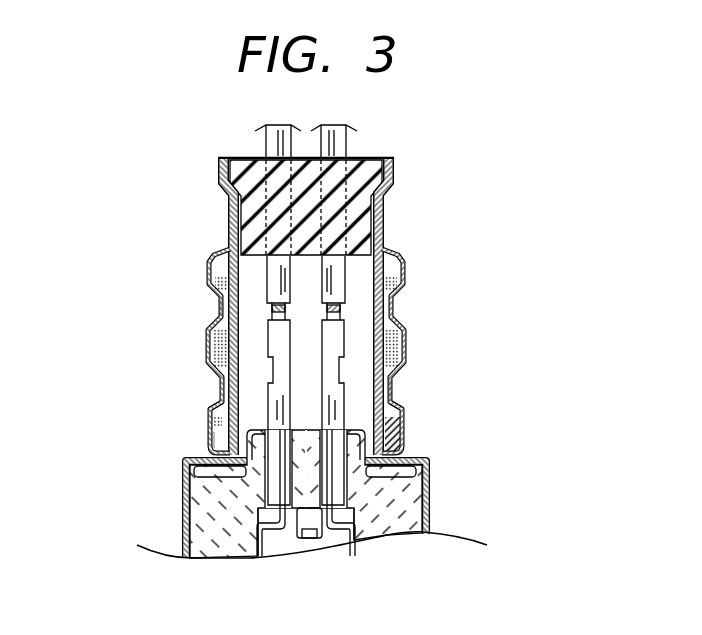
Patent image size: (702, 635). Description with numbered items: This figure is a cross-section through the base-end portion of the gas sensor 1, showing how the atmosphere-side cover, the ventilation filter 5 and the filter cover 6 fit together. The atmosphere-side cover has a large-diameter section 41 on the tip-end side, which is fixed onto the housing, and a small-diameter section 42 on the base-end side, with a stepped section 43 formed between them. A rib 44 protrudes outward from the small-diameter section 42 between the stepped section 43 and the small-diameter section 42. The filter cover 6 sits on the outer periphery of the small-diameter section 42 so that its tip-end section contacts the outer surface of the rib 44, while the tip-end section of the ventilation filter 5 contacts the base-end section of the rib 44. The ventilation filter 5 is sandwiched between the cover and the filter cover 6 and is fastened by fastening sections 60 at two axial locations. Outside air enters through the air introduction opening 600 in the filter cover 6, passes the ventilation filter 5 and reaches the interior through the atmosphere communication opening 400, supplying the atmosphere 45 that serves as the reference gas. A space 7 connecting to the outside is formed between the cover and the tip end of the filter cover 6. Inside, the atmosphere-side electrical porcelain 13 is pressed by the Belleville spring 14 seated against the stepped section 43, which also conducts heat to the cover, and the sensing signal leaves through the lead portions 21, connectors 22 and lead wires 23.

The gas sensor 1 is at (483, 288).
The ventilation filter 5 is at (210, 352).
The filter cover 6 is at (393, 170).
The space 7 is at (400, 436).
The atmosphere-side electrical porcelain 13 is at (225, 525).
The Belleville spring 14 is at (390, 470).
The lead portions 21 is at (262, 540).
The connectors 22 is at (343, 410).
The lead wires 23 is at (340, 145).
The large-diameter section 41 is at (183, 527).
The small-diameter section 42 is at (208, 422).
The stepped section 43 is at (210, 488).
The rib 44 is at (200, 443).
The atmosphere 45 is at (250, 378).
The fastening sections 60 is at (222, 305).
The atmosphere communication opening 400 is at (212, 343).
The air introduction opening 600 is at (402, 348).